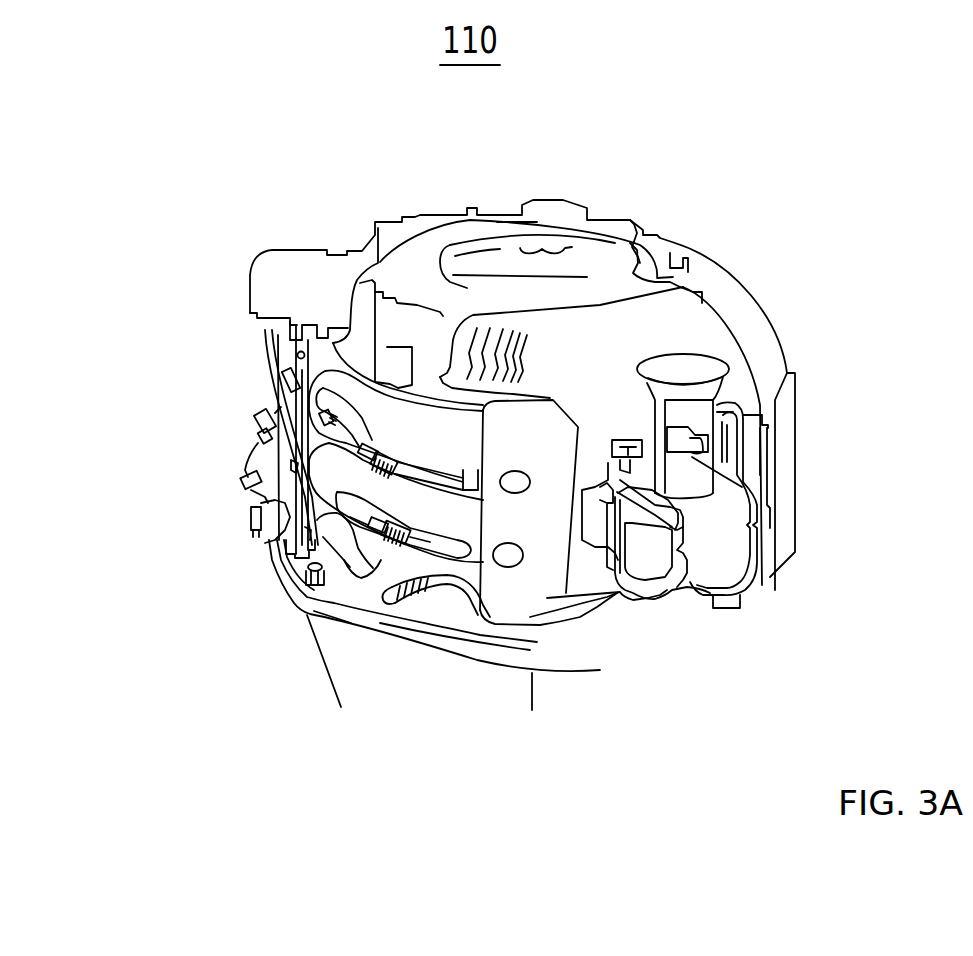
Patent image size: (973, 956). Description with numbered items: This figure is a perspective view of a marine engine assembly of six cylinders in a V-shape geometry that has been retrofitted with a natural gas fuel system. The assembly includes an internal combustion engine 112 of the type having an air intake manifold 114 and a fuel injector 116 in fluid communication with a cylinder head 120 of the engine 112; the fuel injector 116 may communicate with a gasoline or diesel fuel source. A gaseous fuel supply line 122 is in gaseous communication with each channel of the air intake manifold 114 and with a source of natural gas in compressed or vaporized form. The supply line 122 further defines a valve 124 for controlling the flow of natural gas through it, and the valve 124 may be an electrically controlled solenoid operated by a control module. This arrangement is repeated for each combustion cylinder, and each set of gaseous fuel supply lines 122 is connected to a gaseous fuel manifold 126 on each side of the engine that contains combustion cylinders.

The internal combustion engine 112 is at (547, 437).
The air intake manifold 114 is at (445, 437).
The fuel injector 116 is at (290, 502).
The cylinder head 120 is at (285, 364).
The gaseous fuel supply line 122 is at (347, 438).
The valve 124 is at (377, 545).
The gaseous fuel manifold 126 is at (420, 590).